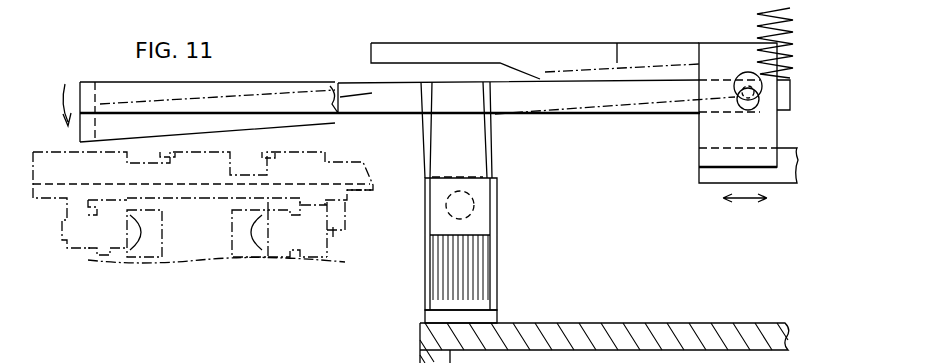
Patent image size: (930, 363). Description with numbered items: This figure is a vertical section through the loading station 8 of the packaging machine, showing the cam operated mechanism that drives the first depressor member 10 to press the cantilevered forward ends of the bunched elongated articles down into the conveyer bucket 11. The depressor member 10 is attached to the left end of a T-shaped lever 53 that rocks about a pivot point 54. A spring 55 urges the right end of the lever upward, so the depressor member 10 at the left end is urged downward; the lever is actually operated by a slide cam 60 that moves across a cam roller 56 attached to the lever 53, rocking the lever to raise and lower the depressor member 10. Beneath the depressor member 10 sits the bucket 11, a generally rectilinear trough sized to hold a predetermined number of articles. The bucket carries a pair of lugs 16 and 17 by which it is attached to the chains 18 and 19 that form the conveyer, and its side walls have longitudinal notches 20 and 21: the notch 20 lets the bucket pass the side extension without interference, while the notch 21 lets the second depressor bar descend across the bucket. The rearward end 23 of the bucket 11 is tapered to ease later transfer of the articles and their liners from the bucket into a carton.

The depressor member 10 is at (88, 82).
The bucket 11 is at (52, 160).
The loading station 8 is at (360, 192).
The lug 16 is at (63, 244).
The lug 17 is at (330, 250).
The chain 18 is at (97, 255).
The chain 19 is at (293, 255).
The notch 20 is at (168, 158).
The notch 21 is at (268, 162).
The rearward end 23 is at (376, 360).
The T-shaped lever 53 is at (360, 82).
The pivot point 54 is at (475, 205).
The spring 55 is at (757, 30).
The cam roller 56 is at (745, 97).
The slide cam 60 is at (473, 52).